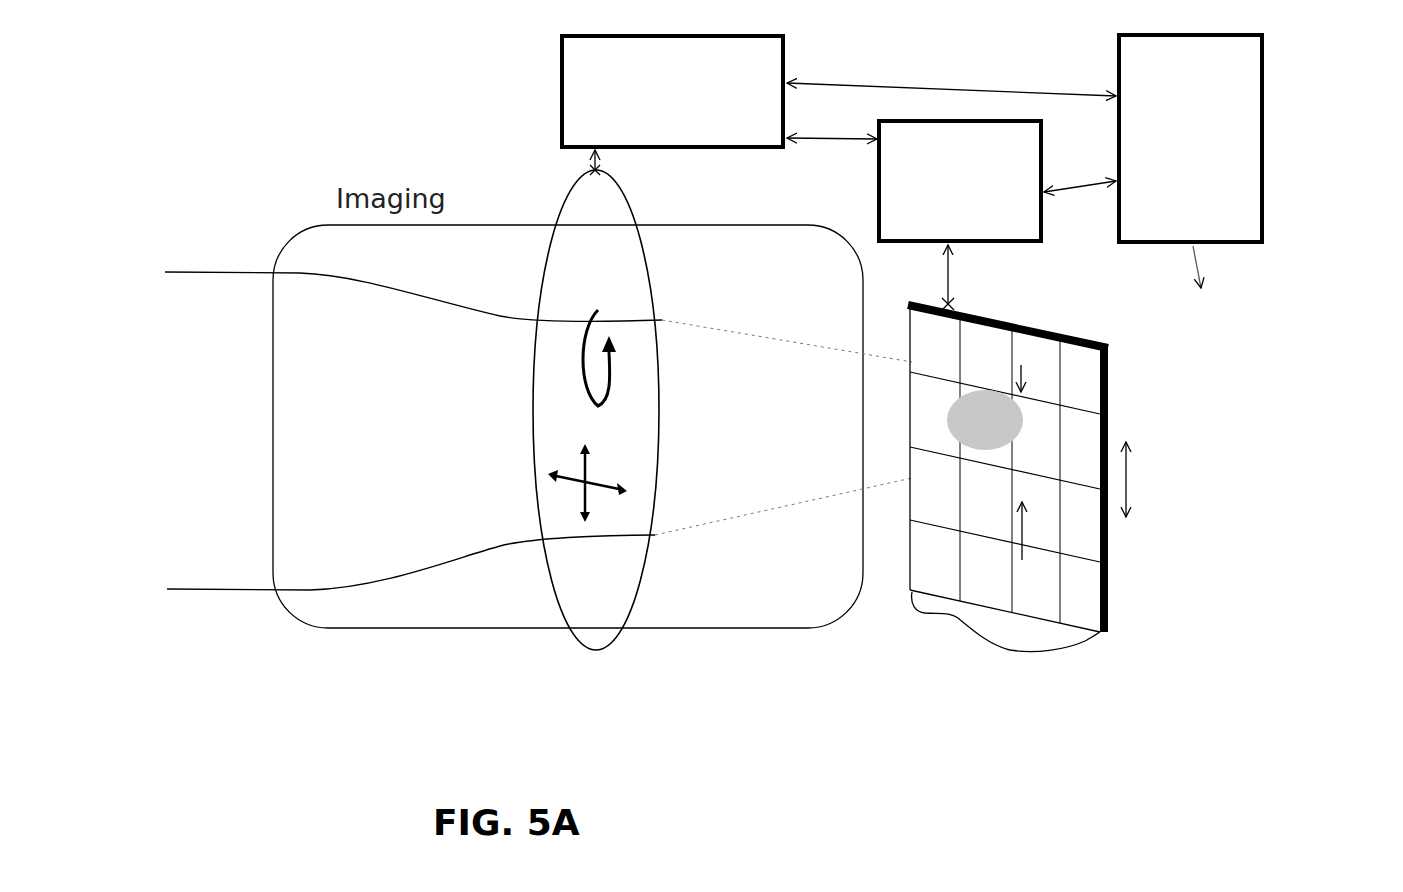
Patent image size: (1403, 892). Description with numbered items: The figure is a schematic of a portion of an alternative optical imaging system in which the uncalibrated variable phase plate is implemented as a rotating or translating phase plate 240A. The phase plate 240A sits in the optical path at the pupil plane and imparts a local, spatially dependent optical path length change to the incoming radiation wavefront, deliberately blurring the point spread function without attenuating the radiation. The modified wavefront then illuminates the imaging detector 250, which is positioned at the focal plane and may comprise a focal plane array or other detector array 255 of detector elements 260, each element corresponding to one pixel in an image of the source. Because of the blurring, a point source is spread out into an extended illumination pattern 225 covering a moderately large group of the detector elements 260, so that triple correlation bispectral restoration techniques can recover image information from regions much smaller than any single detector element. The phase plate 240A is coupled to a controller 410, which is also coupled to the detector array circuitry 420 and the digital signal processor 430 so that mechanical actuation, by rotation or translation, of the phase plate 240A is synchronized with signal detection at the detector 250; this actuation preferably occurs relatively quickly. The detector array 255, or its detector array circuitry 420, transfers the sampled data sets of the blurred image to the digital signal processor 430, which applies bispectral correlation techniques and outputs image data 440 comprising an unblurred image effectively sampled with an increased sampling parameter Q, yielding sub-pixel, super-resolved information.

The controller 410 is at (656, 123).
The detector array circuitry 420 is at (944, 230).
The digital signal processor 430 is at (1174, 176).
The image data 440 is at (1220, 330).
The rotating or translating phase plate 240A is at (633, 605).
The imaging detector 250 is at (1065, 503).
The detector array 255 is at (956, 623).
The detector elements 260 is at (952, 308).
The image spot 225 is at (985, 420).